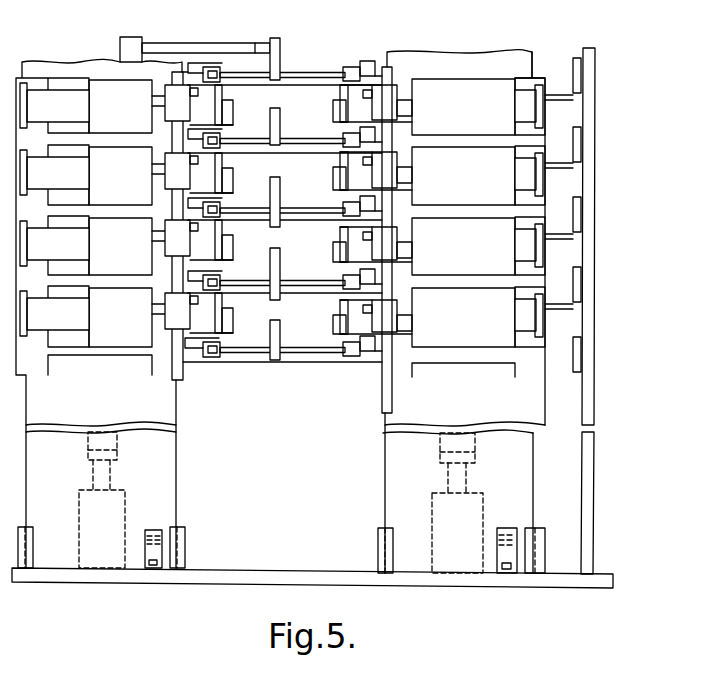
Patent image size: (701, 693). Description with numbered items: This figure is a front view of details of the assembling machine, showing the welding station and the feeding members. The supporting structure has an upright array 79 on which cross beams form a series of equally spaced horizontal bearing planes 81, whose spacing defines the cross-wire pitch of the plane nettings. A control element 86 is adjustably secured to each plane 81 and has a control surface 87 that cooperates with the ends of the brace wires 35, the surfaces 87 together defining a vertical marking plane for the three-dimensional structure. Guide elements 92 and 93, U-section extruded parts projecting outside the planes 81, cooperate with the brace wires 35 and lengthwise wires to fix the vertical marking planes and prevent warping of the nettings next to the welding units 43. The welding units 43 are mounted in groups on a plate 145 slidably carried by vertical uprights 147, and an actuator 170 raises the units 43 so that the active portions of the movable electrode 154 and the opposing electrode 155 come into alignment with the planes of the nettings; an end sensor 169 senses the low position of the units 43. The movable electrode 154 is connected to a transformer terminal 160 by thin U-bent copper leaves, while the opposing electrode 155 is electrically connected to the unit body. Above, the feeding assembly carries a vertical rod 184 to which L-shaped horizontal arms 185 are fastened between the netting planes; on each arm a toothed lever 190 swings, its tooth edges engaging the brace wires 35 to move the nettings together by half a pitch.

The vertical rod 184 is at (128, 51).
The L-shaped horizontal arms 185 is at (172, 49).
The guide element 92 is at (215, 63).
The toothed lever 190 is at (281, 43).
The brace wires 35 is at (300, 140).
The guide element 93 is at (352, 64).
The opposing electrode 155 is at (233, 98).
The movable electrode 154 is at (157, 107).
The welding units 43 is at (604, 88).
The upright array 79 is at (596, 251).
The bearing planes 81 is at (298, 222).
The control element 86 is at (197, 352).
The control surface 87 is at (367, 346).
The plate 145 is at (175, 426).
The vertical uprights 147 is at (377, 409).
The actuator 170 is at (116, 497).
The terminal 160 is at (145, 533).
The end sensor 169 is at (143, 560).